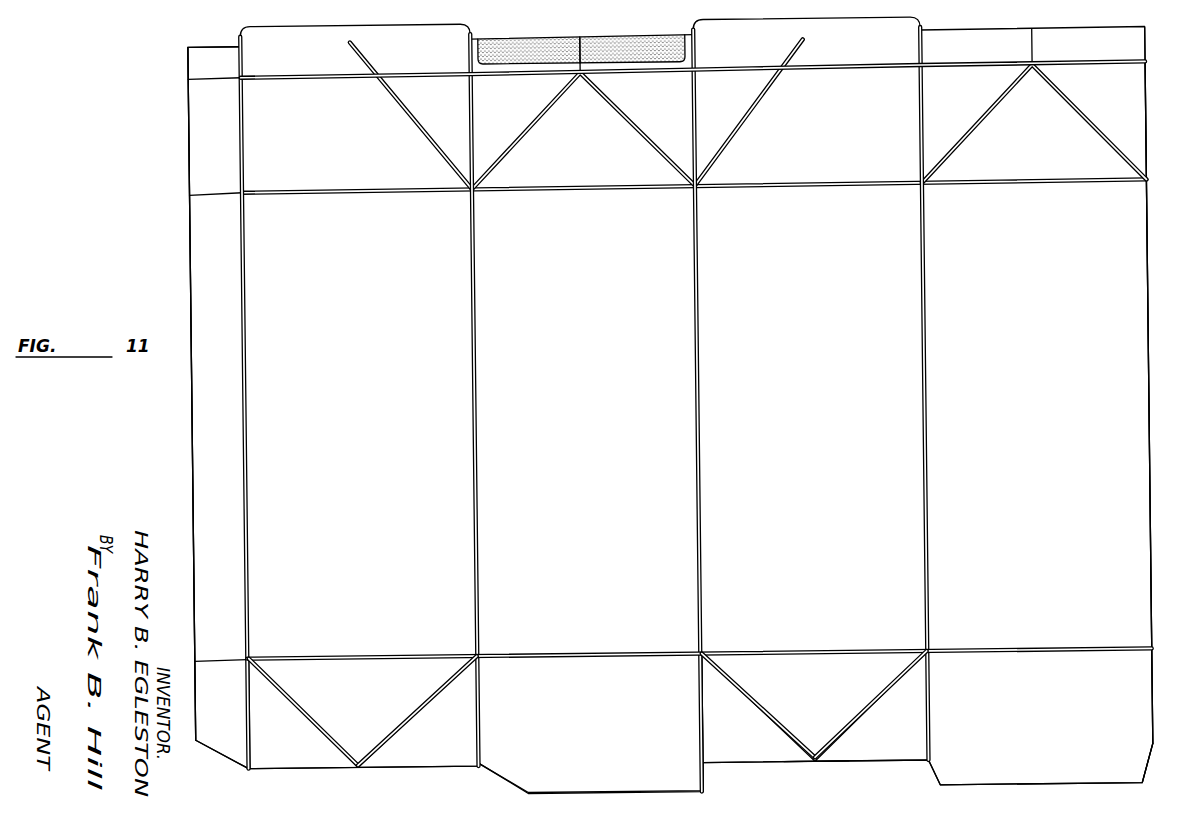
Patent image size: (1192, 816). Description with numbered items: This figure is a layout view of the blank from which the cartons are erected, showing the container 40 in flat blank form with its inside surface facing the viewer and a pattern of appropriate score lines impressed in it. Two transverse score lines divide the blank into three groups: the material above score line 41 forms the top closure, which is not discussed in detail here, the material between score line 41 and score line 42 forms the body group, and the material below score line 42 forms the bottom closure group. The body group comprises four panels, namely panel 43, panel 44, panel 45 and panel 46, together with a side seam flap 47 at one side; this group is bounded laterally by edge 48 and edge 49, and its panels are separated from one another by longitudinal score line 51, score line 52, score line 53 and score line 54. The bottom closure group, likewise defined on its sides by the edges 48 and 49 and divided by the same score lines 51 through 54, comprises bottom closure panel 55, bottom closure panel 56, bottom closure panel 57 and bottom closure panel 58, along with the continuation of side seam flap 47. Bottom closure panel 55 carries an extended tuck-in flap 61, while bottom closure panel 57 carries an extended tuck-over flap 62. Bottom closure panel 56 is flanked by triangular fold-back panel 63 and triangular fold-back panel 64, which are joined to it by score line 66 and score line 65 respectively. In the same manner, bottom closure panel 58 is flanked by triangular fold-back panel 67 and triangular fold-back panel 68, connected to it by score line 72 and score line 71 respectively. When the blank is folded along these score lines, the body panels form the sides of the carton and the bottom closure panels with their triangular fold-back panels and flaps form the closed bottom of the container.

The container 40 is at (190, 231).
The score line 41 is at (345, 192).
The score line 42 is at (402, 657).
The panel 43 is at (1057, 463).
The panel 44 is at (822, 465).
The panel 45 is at (588, 465).
The panel 46 is at (268, 462).
The side seam flap 47 is at (207, 438).
The edge 48 is at (1150, 368).
The edge 49 is at (192, 391).
The score line 51 is at (925, 320).
The score line 52 is at (697, 320).
The score line 53 is at (474, 320).
The score line 54 is at (246, 322).
The bottom closure panel 55 is at (1108, 705).
The bottom closure panel 56 is at (826, 725).
The bottom closure panel 57 is at (545, 750).
The bottom closure panel 58 is at (362, 722).
The tuck-in flap 61 is at (1135, 768).
The tuck-over flap 62 is at (697, 773).
The triangular fold-back panel 63 is at (888, 728).
The triangular fold-back panel 64 is at (763, 742).
The score line 65 is at (742, 690).
The score line 66 is at (890, 688).
The triangular fold-back panel 67 is at (442, 735).
The triangular fold-back panel 68 is at (283, 750).
The score line 71 is at (283, 693).
The score line 72 is at (437, 696).